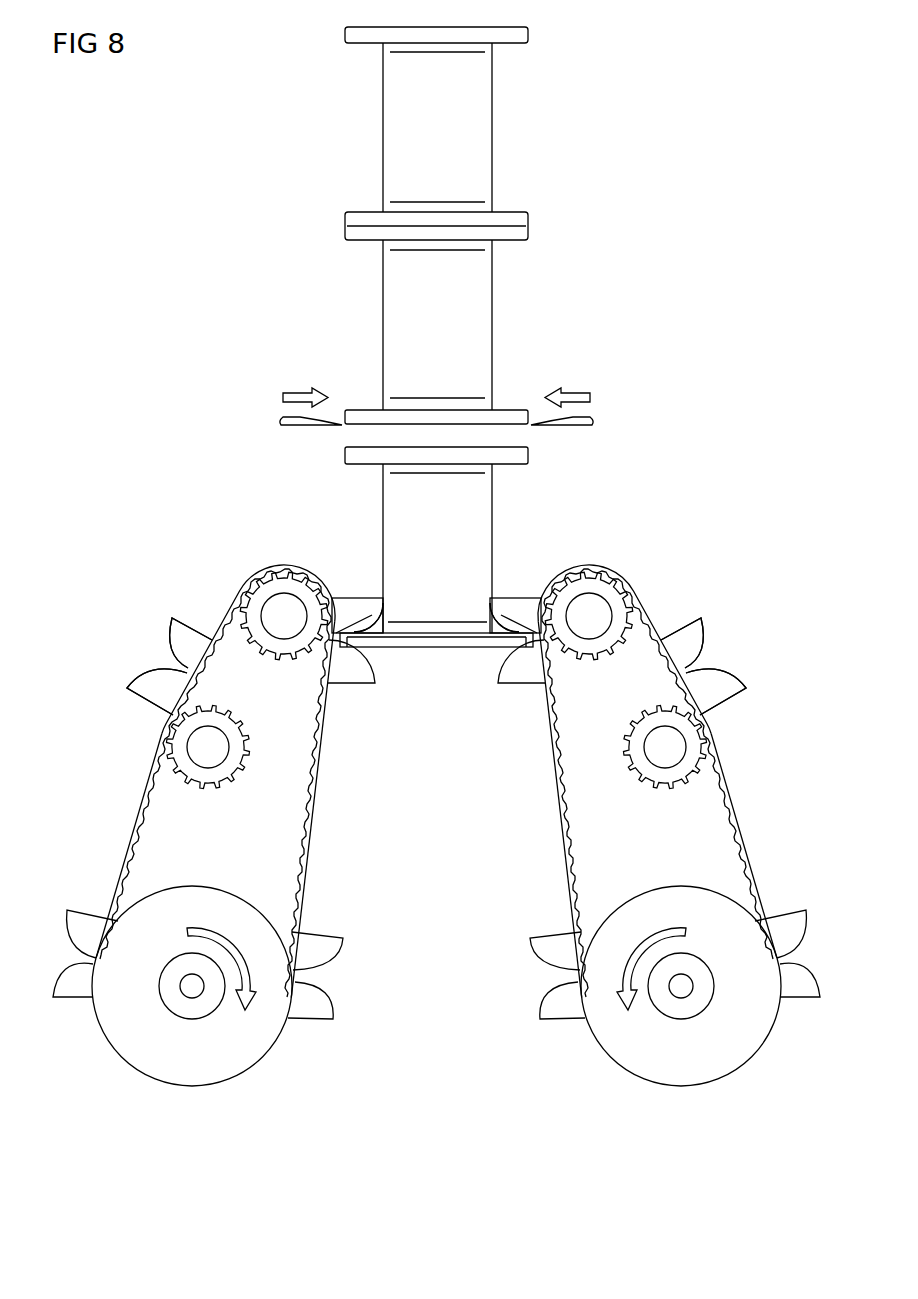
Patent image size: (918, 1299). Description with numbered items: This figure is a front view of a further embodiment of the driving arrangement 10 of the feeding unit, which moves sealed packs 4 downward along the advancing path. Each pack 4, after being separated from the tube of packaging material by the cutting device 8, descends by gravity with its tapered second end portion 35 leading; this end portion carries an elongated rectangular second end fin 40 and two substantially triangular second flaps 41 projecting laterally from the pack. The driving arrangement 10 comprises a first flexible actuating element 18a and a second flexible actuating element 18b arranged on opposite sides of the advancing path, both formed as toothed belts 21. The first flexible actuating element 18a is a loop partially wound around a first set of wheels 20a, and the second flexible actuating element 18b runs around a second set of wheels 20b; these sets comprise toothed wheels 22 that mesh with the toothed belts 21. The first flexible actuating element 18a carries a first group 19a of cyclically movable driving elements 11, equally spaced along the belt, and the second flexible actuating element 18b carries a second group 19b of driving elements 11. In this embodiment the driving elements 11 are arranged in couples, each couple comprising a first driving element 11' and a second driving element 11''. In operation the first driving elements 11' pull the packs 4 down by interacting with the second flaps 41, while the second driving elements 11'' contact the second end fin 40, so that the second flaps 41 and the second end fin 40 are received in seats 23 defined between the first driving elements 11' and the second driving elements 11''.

The pack 4 is at (397, 124).
The cutting device 8 is at (578, 422).
The driving arrangement 10 is at (436, 817).
The driving elements 11 is at (436, 661).
The first driving element 11' is at (436, 631).
The second driving element 11'' is at (435, 663).
The first flexible actuating element 18a is at (147, 800).
The second flexible actuating element 18b is at (726, 800).
The first group of driving elements 19a is at (91, 1043).
The second group of driving elements 19b is at (782, 1043).
The first set of wheels 20a is at (168, 843).
The second set of wheels 20b is at (705, 843).
The toothed belts 21 is at (292, 838).
The toothed wheels 22 is at (286, 656).
The seats 23 is at (372, 660).
The second end portion 35 is at (505, 587).
The second end fin 40 is at (433, 648).
The second flaps 41 is at (380, 622).